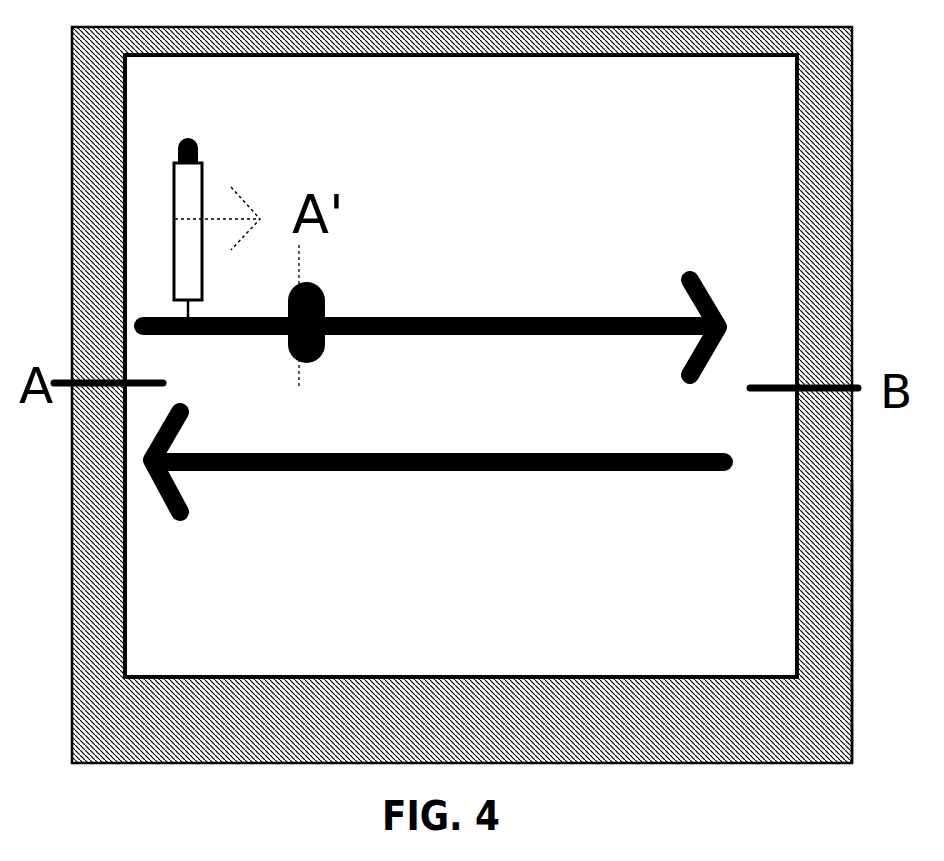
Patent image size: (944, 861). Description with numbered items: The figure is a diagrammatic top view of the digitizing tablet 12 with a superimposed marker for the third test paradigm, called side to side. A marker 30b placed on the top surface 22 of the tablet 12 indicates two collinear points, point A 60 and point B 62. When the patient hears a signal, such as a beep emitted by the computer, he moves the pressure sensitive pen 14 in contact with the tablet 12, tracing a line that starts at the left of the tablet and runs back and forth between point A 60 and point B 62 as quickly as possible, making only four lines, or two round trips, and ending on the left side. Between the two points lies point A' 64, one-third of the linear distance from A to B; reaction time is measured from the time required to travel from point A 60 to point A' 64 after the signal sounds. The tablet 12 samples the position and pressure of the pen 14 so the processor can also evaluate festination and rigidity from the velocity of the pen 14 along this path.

The digitizing tablet 12 is at (72, 297).
The pressure sensitive pen 14 is at (202, 168).
The top surface 22 is at (140, 582).
The marker 30b is at (777, 537).
The point A 60 is at (162, 379).
The point B 62 is at (755, 393).
The point A' 64 is at (320, 295).